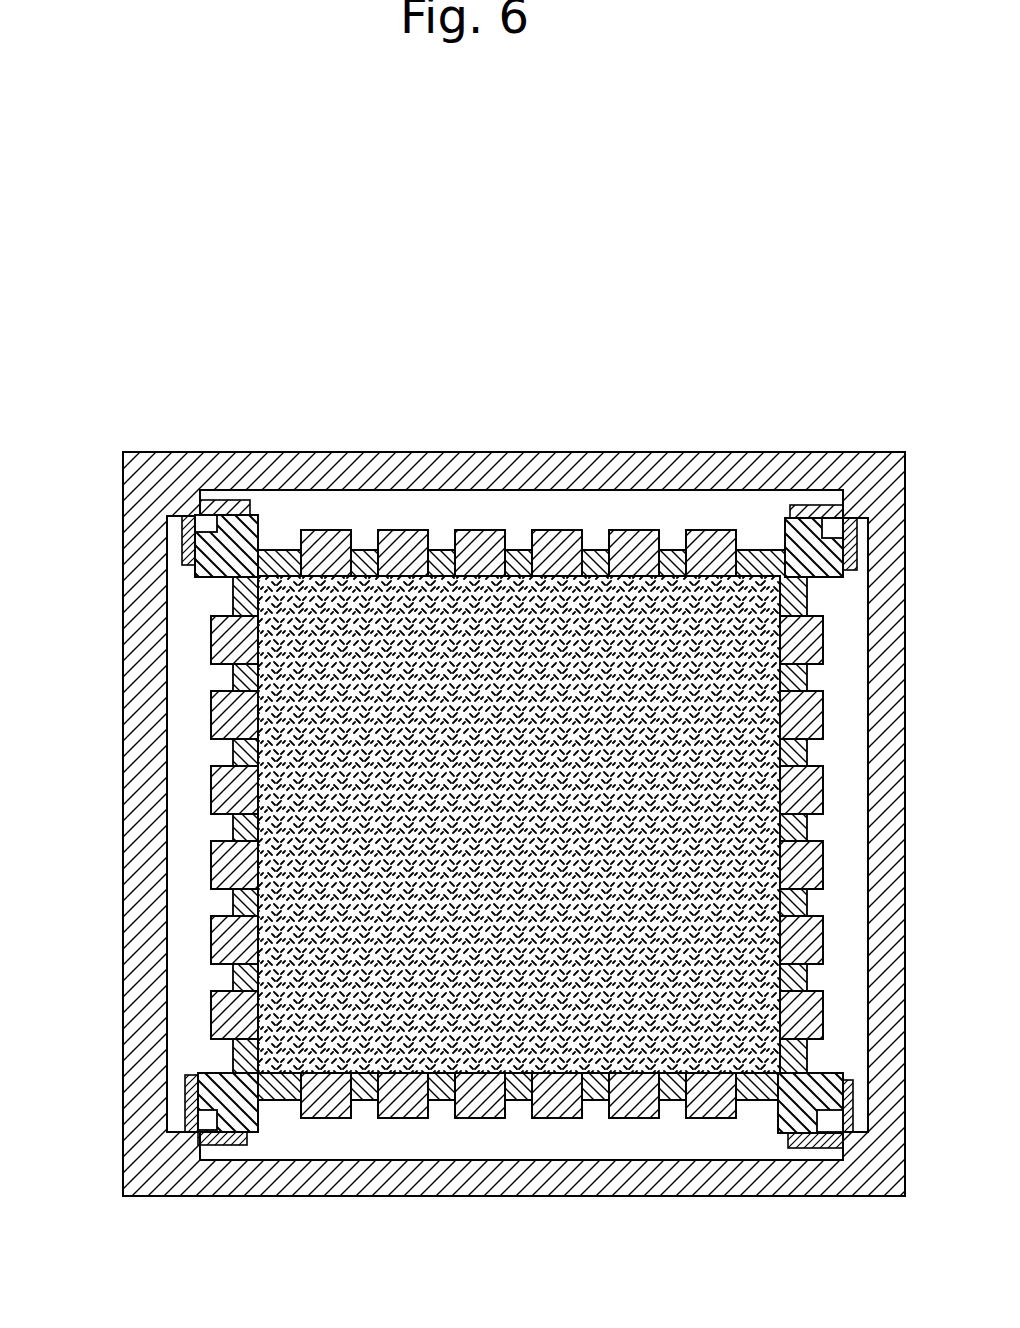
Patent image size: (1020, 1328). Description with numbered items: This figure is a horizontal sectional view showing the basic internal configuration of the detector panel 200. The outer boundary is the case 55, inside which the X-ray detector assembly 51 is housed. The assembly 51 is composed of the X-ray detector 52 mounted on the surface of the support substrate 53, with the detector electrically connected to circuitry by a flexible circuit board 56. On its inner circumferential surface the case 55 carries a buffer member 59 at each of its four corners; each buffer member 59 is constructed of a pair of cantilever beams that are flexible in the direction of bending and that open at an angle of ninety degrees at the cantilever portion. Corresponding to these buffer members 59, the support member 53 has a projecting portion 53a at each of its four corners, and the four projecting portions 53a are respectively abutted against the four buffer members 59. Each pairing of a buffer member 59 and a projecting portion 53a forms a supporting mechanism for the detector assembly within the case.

The detector panel 200 is at (493, 244).
The X-ray detector assembly 51 is at (316, 505).
The X-ray detector 52 is at (470, 612).
The support substrate 53 is at (227, 895).
The projecting portion 53a is at (203, 1080).
The case 55 is at (430, 1180).
The flexible circuit board 56 is at (213, 937).
The buffer member 59 is at (190, 1108).